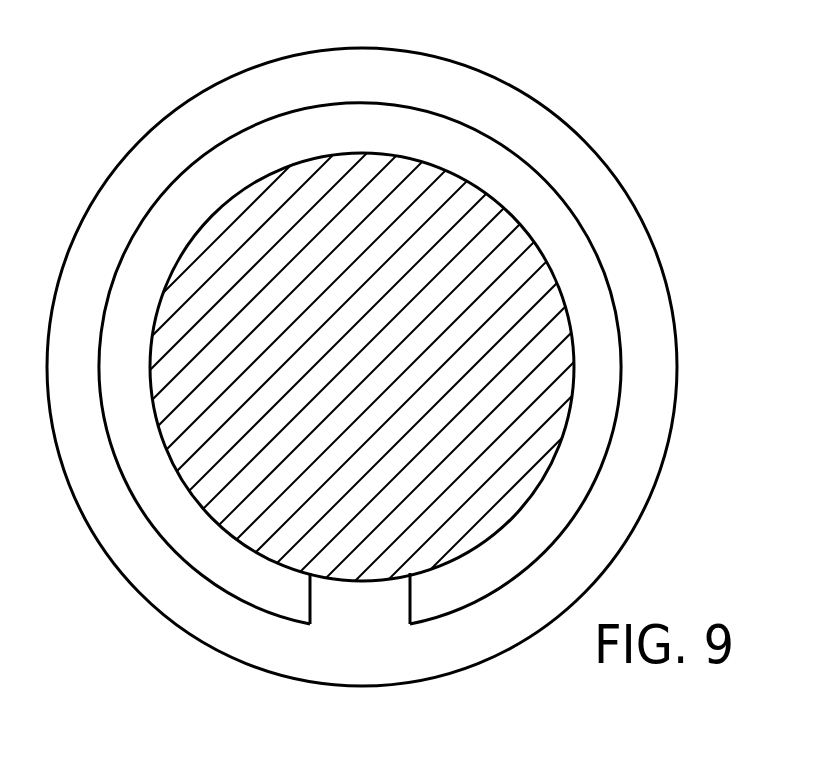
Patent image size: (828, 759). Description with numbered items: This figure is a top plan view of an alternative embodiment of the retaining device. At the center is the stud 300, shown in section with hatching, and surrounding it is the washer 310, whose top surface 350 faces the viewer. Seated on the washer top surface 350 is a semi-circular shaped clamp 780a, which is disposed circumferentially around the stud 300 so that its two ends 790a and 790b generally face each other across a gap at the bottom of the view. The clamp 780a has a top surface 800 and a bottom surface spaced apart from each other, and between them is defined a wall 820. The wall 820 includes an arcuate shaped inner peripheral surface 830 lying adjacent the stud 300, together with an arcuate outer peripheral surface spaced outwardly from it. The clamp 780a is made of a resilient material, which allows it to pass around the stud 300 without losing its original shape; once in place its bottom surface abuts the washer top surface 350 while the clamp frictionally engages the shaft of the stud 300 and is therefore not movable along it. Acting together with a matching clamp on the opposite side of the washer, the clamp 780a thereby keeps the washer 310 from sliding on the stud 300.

The washer 310 is at (673, 319).
The top surface of the washer 350 is at (613, 517).
The stud 300 is at (246, 526).
The end of clamp 790a is at (270, 593).
The end of clamp 790b is at (410, 607).
The semi-circular shaped clamp 780a is at (318, 146).
The top surface of clamp 800 is at (597, 352).
The wall 820 is at (527, 553).
The inner peripheral surface 830 is at (152, 388).